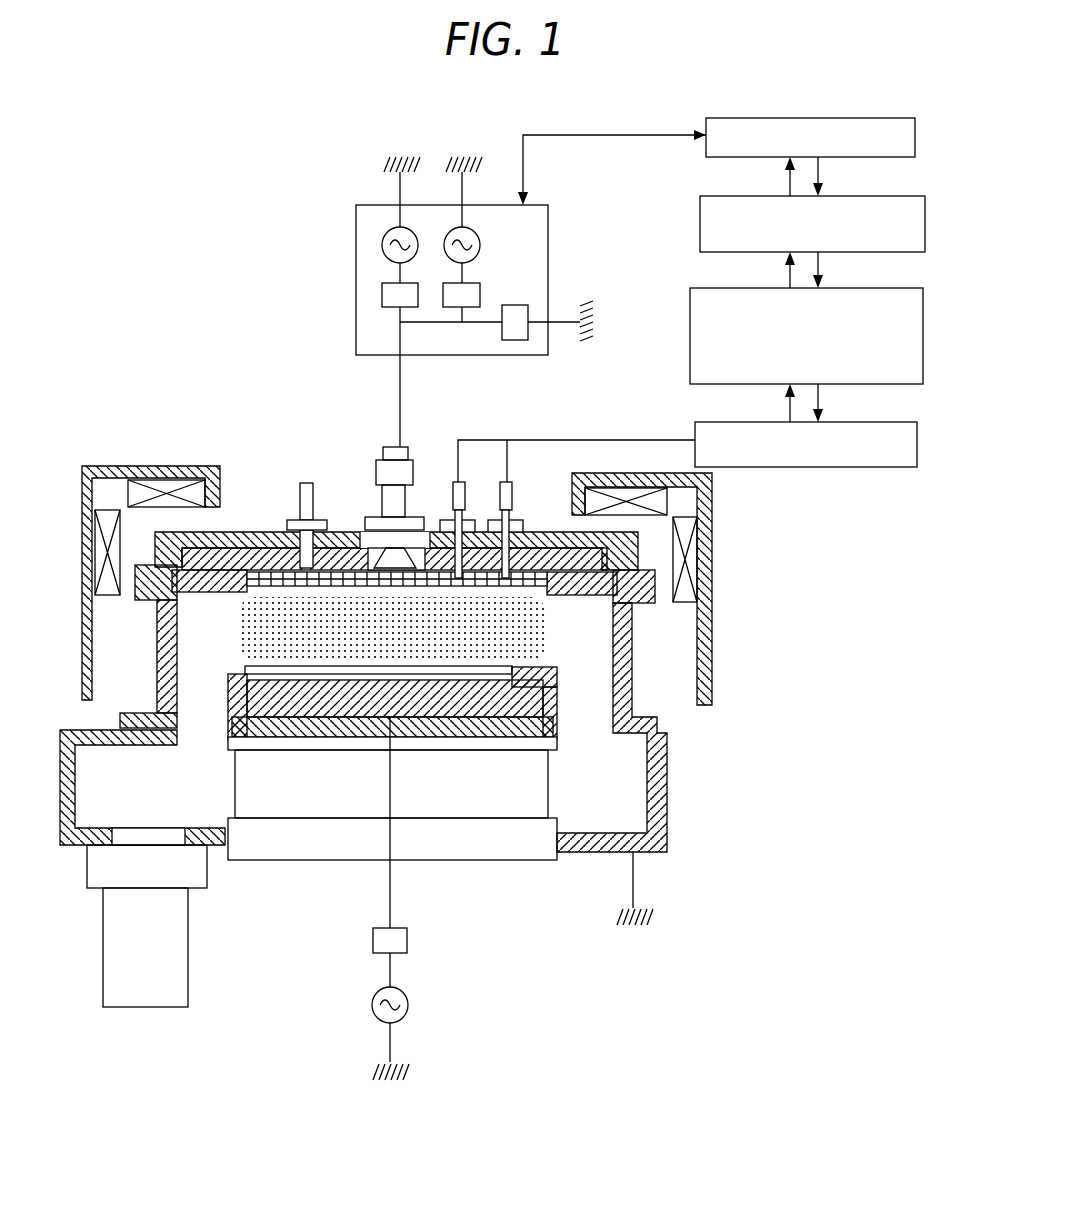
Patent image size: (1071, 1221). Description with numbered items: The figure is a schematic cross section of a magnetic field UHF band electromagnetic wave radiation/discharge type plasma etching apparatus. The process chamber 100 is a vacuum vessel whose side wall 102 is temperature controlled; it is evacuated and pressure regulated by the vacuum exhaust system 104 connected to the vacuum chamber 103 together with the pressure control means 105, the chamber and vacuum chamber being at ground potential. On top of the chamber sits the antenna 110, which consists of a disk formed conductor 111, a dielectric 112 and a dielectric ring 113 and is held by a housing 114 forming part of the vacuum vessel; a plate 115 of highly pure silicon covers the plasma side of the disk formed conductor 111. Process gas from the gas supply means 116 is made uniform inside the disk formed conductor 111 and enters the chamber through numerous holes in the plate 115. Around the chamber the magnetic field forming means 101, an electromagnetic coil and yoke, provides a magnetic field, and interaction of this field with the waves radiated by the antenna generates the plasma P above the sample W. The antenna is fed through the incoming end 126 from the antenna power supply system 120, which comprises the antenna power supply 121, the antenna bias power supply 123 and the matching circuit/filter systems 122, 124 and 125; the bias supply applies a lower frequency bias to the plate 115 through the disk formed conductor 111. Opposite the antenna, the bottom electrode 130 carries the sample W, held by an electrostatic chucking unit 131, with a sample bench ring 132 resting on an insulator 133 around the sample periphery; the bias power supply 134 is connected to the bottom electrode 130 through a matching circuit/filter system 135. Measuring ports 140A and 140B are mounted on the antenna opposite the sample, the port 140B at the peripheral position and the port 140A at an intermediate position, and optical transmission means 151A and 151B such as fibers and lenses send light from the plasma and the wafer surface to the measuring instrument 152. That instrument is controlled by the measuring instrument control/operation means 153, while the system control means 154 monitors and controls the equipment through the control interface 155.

The process chamber 100 is at (374, 725).
The magnetic field forming means 101 is at (374, 545).
The side wall 102 is at (157, 663).
The vacuum chamber 103 is at (97, 727).
The vacuum exhaust system 104 is at (130, 995).
The pressure control means 105 is at (98, 882).
The antenna 110 is at (395, 489).
The disk formed conductor 111 is at (250, 560).
The dielectric 112 is at (160, 492).
The dielectric ring 113 is at (110, 477).
The housing 114 is at (90, 513).
The plate 115 is at (200, 558).
The gas supply means 116 is at (300, 480).
The antenna power supply system 120 is at (385, 192).
The antenna power supply 121 is at (383, 238).
The matching circuit/filter system 122 is at (382, 293).
The antenna bias power supply 123 is at (480, 240).
The matching circuit/filter system 124 is at (482, 295).
The matching circuit/filter system 125 is at (528, 310).
The incoming end 126 is at (393, 446).
The bottom electrode 130 is at (392, 858).
The electrostatic chucking unit 131 is at (317, 705).
The sample bench ring 132 is at (283, 705).
The insulator 133 is at (255, 705).
The bias power supply 134 is at (408, 1008).
The matching circuit/filter system 135 is at (410, 940).
The measuring port 140A is at (447, 513).
The measuring port 140B is at (520, 513).
The optical transmission means 151A is at (465, 468).
The optical transmission means 151B is at (509, 468).
The measuring instrument 152 is at (695, 433).
The measuring instrument control/operation means 153 is at (690, 300).
The system control means 154 is at (700, 205).
The control interface 155 is at (706, 125).
The plasma P is at (545, 637).
The sample W is at (368, 672).